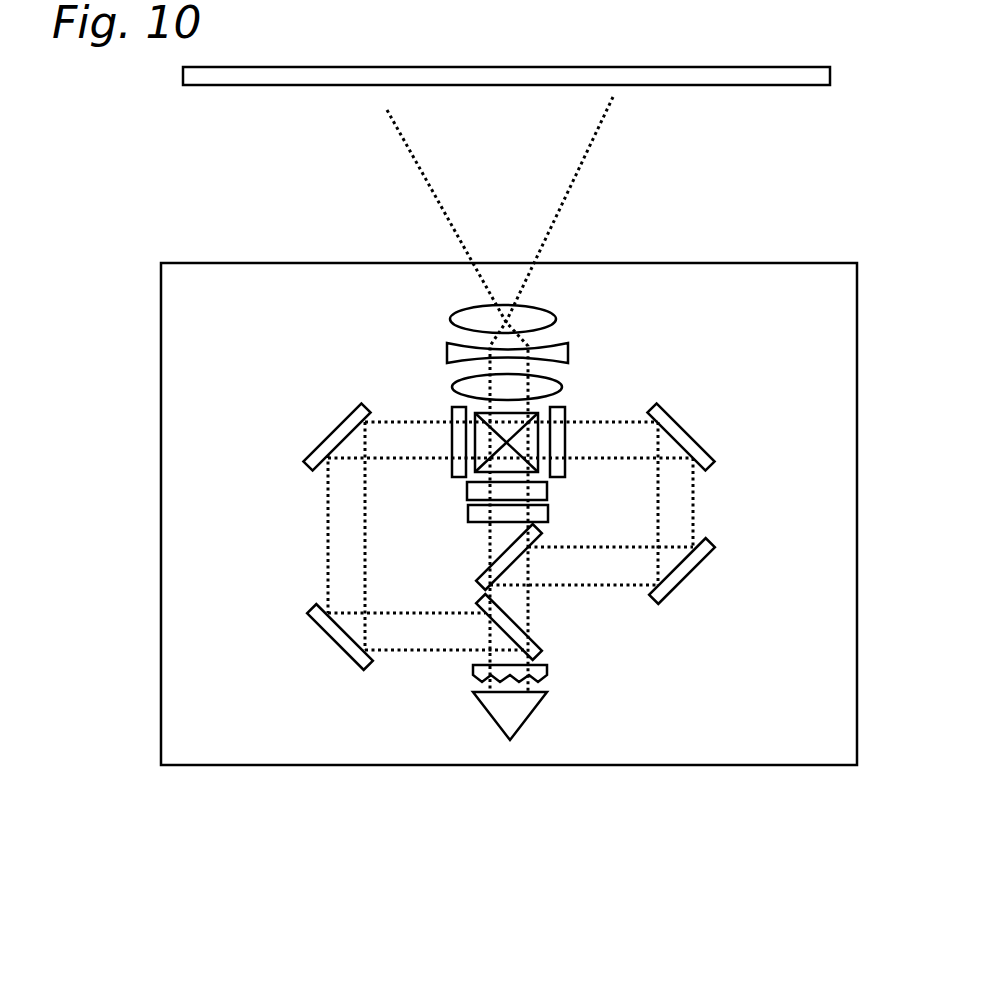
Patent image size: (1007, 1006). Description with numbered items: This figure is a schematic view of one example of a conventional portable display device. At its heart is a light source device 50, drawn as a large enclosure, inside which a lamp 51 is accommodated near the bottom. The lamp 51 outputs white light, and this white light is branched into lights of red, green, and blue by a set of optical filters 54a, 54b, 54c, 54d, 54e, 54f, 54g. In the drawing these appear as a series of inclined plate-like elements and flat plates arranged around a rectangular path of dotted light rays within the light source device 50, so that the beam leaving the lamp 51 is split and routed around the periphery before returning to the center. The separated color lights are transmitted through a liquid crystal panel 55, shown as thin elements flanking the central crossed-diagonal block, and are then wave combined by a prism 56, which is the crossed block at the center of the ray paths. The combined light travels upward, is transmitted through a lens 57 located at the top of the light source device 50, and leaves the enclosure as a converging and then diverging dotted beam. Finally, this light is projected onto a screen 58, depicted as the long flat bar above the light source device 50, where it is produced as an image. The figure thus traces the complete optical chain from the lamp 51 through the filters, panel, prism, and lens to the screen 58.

The light source device 50 is at (96, 248).
The lamp 51 is at (517, 715).
The optical filter 54a is at (540, 643).
The optical filter 54b is at (338, 640).
The optical filter 54c is at (515, 563).
The optical filter 54d is at (698, 570).
The optical filter 54e is at (322, 437).
The optical filter 54f is at (677, 428).
The optical filter 54g is at (540, 486).
The liquid crystal panel 55 is at (547, 438).
The prism 56 is at (538, 413).
The lens 57 is at (555, 320).
The screen 58 is at (688, 75).